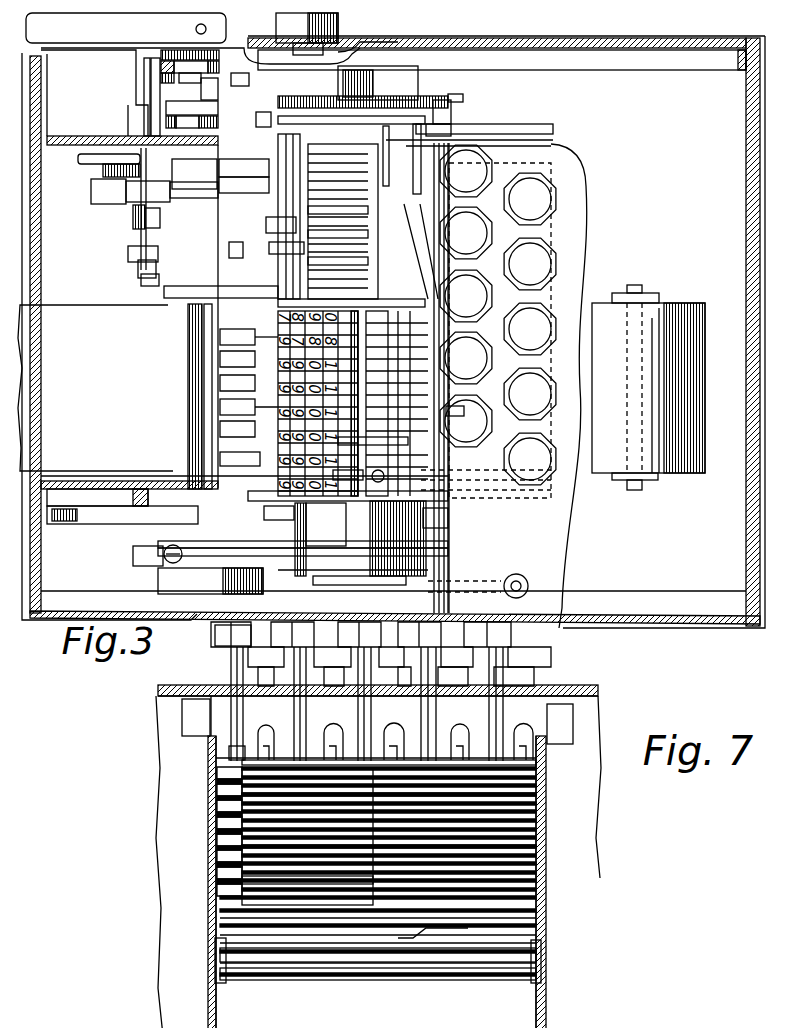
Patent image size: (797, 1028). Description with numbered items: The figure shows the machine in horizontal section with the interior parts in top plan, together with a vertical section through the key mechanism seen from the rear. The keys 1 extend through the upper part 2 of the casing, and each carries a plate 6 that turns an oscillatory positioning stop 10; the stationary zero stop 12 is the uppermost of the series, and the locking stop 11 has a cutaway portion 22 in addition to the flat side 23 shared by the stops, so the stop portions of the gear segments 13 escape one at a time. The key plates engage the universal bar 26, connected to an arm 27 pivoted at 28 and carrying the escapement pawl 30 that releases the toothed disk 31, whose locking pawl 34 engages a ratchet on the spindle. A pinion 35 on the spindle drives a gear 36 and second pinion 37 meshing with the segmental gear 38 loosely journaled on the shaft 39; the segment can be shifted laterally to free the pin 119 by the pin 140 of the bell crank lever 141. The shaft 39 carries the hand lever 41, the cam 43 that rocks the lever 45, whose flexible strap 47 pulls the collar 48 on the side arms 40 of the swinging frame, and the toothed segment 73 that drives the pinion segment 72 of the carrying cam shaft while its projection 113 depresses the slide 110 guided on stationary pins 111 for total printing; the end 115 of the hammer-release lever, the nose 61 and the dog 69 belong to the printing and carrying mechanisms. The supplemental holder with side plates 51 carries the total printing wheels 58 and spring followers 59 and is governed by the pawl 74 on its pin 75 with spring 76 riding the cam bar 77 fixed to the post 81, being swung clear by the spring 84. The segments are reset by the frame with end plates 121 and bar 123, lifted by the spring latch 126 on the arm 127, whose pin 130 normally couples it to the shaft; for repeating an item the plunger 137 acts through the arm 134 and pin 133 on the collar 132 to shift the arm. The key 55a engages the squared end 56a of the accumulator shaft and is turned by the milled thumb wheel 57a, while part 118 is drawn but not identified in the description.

In FIG. 3, the hand lever 41 is at (126, 28).
In FIG. 3, the end plates 121 is at (275, 27).
In FIG. 3, the milled thumb wheel 57a is at (372, 40).
In FIG. 3, the upper part of the casing 2 is at (502, 60).
In FIG. 7, the upper part of the casing 2 is at (569, 686).
In FIG. 3, the pin 140 is at (153, 58).
In FIG. 3, the bell crank lever 141 is at (136, 76).
In FIG. 3, the shaft 39 is at (152, 92).
In FIG. 3, the segmental gear 38 is at (254, 82).
In FIG. 3, the pin 119 is at (210, 84).
In FIG. 3, the lever 118 is at (210, 104).
In FIG. 3, the side plates or arms 40 is at (256, 126).
In FIG. 3, the locking pawl 34 is at (332, 116).
In FIG. 3, the pinion 35 is at (385, 92).
In FIG. 3, the gear 36 is at (434, 98).
In FIG. 3, the second pinion 37 is at (456, 90).
In FIG. 3, the pivot 28 is at (442, 122).
In FIG. 3, the arm 27 is at (499, 121).
In FIG. 3, the universal bar 26 is at (548, 134).
In FIG. 3, the spring latch 126 is at (90, 157).
In FIG. 3, the collar 132 is at (97, 236).
In FIG. 3, the pin 130 is at (194, 189).
In FIG. 3, the spring actuated key 55a is at (244, 172).
In FIG. 3, the squared end 56a is at (244, 189).
In FIG. 3, the arm 127 is at (105, 192).
In FIG. 3, the pin 133 is at (122, 248).
In FIG. 3, the arm 134 is at (140, 262).
In FIG. 3, the plunger 137 is at (143, 278).
In FIG. 3, the post 81 is at (224, 262).
In FIG. 3, the pin 75 is at (270, 216).
In FIG. 3, the spring 76 is at (276, 242).
In FIG. 3, the cam bar 77 is at (232, 284).
In FIG. 3, the spring followers 59 is at (214, 331).
In FIG. 3, the total printing wheels 58 is at (214, 401).
In FIG. 3, the side plates 51 is at (214, 451).
In FIG. 3, the slide 110 is at (203, 476).
In FIG. 3, the actuating gear segments 13 is at (360, 203).
In FIG. 3, the longitudinal bar 123 is at (360, 226).
In FIG. 3, the pawl 74 is at (360, 253).
In FIG. 3, the disk 31 is at (377, 126).
In FIG. 3, the escapement pawl 30 is at (408, 126).
In FIG. 3, the nose 61 is at (340, 433).
In FIG. 3, the dog 69 is at (466, 413).
In FIG. 3, the keys 1 is at (543, 207).
In FIG. 7, the keys 1 is at (233, 627).
In FIG. 3, the toothed segment 73 is at (56, 516).
In FIG. 3, the projection 113 is at (130, 498).
In FIG. 3, the lever 45 is at (138, 554).
In FIG. 3, the cam 43 is at (210, 581).
In FIG. 3, the stationary pins 111 is at (256, 506).
In FIG. 3, the flexible strap 47 is at (226, 541).
In FIG. 3, the spring 84 is at (330, 474).
In FIG. 3, the collar 48 is at (316, 594).
In FIG. 3, the pinion segment 72 is at (425, 514).
In FIG. 3, the end of lever 115 is at (511, 568).
In FIG. 7, the key plate 6 is at (220, 746).
In FIG. 7, the zero stop 12 is at (513, 757).
In FIG. 7, the positioning stop 10 is at (523, 786).
In FIG. 7, the locking stop 11 is at (520, 912).
In FIG. 7, the cutaway portion 22 is at (346, 893).
In FIG. 7, the flat side 23 is at (340, 872).